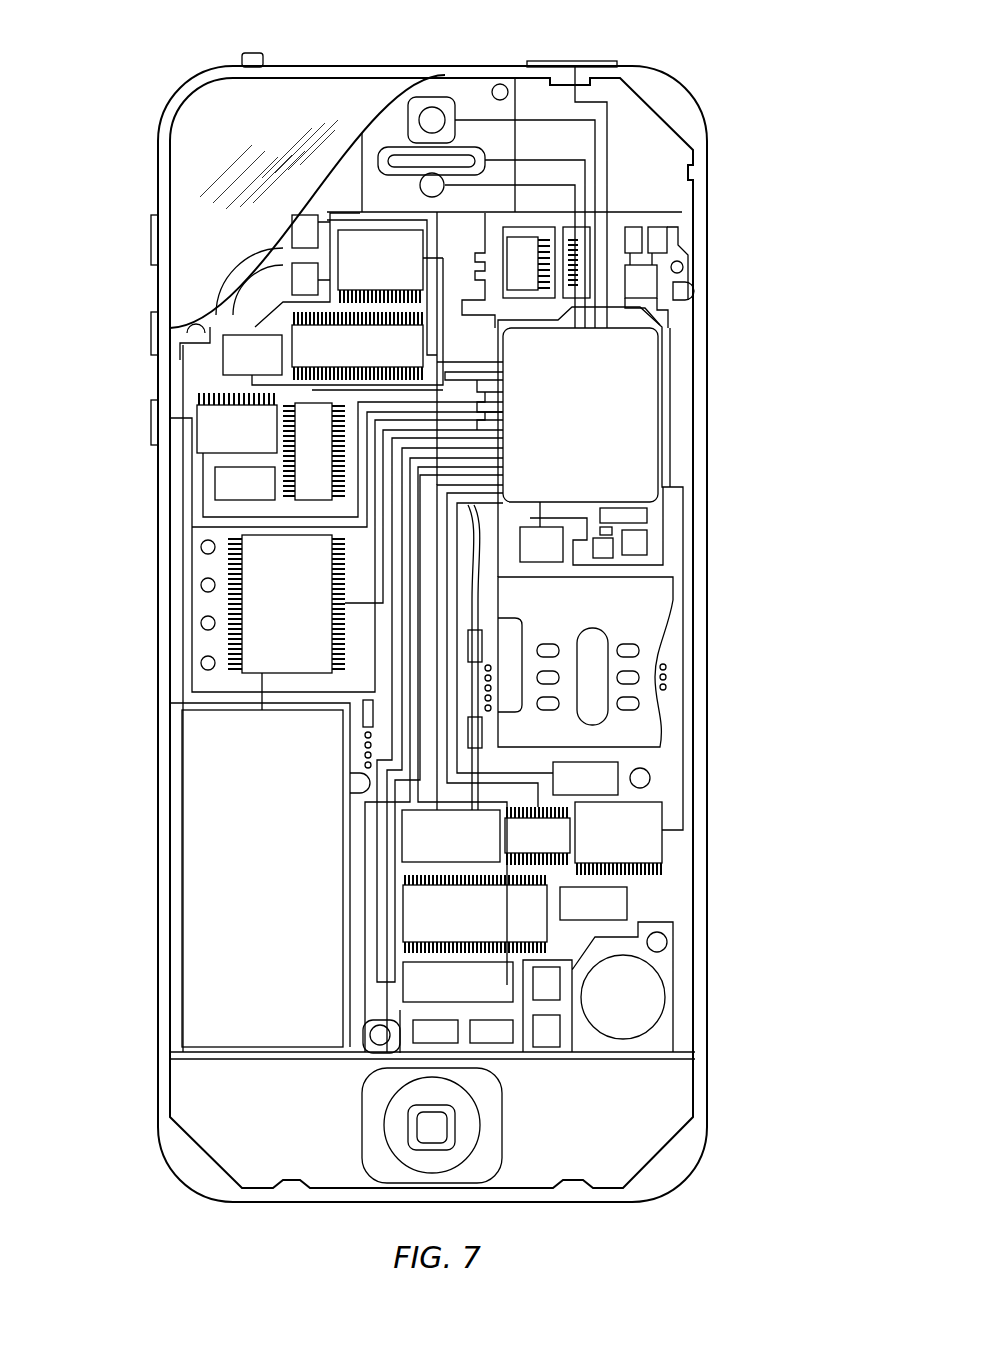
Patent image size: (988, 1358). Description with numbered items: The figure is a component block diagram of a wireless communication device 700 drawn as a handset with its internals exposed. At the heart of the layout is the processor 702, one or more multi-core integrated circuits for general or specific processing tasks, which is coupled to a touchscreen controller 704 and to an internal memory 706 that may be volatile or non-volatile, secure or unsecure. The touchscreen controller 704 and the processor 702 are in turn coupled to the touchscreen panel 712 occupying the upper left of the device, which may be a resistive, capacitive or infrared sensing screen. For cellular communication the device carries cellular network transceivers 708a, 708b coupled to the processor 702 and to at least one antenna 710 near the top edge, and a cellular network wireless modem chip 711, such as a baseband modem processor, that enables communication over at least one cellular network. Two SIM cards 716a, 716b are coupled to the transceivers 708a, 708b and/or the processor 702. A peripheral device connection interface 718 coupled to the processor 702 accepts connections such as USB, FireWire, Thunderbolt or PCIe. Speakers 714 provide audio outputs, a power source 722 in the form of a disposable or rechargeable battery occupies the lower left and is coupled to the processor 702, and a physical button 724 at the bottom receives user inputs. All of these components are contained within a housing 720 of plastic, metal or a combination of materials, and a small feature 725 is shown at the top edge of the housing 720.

The wireless communication device 700 is at (116, 53).
The processor 702 is at (569, 424).
The touchscreen controller 704 is at (367, 271).
The internal memory 706 is at (273, 606).
The cellular network transceiver 708a is at (605, 240).
The cellular network transceiver 708b is at (322, 432).
The antenna 710 is at (647, 288).
The cellular network wireless modem chip 711 is at (461, 922).
The touchscreen panel 712 is at (198, 162).
The speakers 714 is at (386, 148).
The SIM card 716a is at (567, 788).
The SIM card 716b is at (575, 913).
The peripheral device connection interface 718 is at (444, 991).
The housing 720 is at (707, 1078).
The power source 722 is at (248, 889).
The physical button 724 is at (440, 1137).
The antenna 725 is at (572, 60).